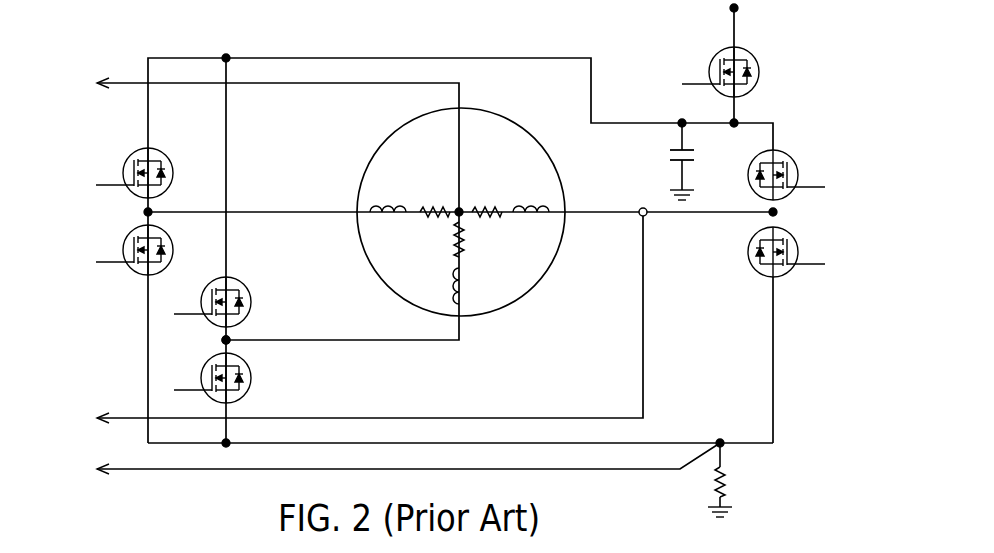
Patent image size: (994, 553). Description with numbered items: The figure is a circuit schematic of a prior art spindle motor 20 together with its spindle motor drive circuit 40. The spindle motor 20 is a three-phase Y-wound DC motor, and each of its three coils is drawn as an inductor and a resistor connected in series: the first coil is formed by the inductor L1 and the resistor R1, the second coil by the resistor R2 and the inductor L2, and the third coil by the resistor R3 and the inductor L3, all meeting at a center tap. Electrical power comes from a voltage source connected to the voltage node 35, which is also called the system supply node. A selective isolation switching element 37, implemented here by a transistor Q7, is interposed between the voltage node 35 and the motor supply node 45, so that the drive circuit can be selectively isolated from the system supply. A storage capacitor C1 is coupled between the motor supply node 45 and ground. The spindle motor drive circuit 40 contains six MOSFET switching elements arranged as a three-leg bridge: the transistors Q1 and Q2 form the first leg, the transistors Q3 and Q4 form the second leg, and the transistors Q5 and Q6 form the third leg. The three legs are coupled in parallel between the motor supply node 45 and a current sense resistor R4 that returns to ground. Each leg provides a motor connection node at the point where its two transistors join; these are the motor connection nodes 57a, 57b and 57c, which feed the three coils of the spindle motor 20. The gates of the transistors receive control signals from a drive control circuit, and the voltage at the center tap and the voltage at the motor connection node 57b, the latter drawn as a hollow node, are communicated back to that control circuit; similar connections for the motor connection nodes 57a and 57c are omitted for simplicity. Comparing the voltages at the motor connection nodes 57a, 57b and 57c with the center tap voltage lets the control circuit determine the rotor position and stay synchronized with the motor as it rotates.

The spindle motor 20 is at (461, 208).
The voltage node 35 is at (740, 9).
The selective isolation switching element 37 is at (729, 62).
The spindle motor drive circuit 40 is at (146, 485).
The motor supply node 45 is at (681, 116).
The motor connection node 57a is at (152, 210).
The motor connection node 57b is at (768, 216).
The motor connection node 57c is at (222, 343).
The transistor Q1 is at (149, 173).
The transistor Q2 is at (149, 250).
The transistor Q3 is at (787, 175).
The transistor Q4 is at (787, 252).
The transistor Q5 is at (226, 302).
The transistor Q6 is at (226, 378).
The transistor Q7 is at (692, 38).
The inductor L1 is at (388, 197).
The inductor L2 is at (531, 197).
The inductor L3 is at (472, 286).
The resistor R1 is at (435, 200).
The resistor R2 is at (487, 200).
The resistor R3 is at (472, 239).
The current sense resistor R4 is at (732, 480).
The storage capacitor C1 is at (696, 159).